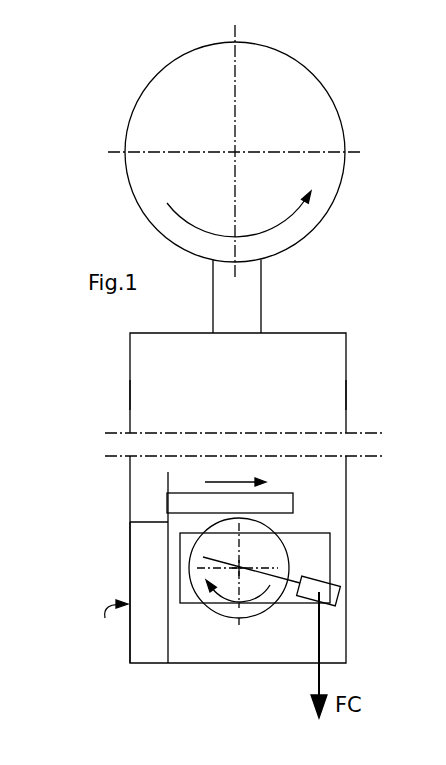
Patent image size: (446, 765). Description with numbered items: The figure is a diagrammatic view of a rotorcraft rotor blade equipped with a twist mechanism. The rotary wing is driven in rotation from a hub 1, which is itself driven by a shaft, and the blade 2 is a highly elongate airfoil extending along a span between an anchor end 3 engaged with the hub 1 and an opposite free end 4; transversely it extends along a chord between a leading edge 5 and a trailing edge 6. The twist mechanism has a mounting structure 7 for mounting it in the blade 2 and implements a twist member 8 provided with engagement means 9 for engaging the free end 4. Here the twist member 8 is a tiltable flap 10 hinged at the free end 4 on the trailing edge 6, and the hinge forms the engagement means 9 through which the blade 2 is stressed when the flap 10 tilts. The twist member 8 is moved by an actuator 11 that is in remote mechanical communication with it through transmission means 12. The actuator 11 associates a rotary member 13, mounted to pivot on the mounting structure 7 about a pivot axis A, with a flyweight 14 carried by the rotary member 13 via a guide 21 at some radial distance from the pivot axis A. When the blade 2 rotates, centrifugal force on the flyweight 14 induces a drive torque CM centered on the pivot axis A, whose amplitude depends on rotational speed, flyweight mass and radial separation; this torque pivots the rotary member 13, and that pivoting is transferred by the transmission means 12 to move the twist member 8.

The hub 1 is at (197, 108).
The blade 2 is at (163, 375).
The anchor end 3 is at (342, 304).
The free end 4 is at (367, 666).
The leading edge 5 is at (346, 395).
The trailing edge 6 is at (130, 393).
The mounting structure 7 is at (330, 559).
The twist member 8 is at (108, 556).
The engagement means 9 is at (167, 479).
The tiltable flap 10 is at (160, 591).
The actuator 11 is at (269, 630).
The transmission means 12 is at (285, 486).
The rotary member 13 is at (213, 612).
The flyweight 14 is at (342, 607).
The guide 21 is at (232, 560).
The pivot axis A is at (261, 560).
The drive torque CM is at (238, 589).